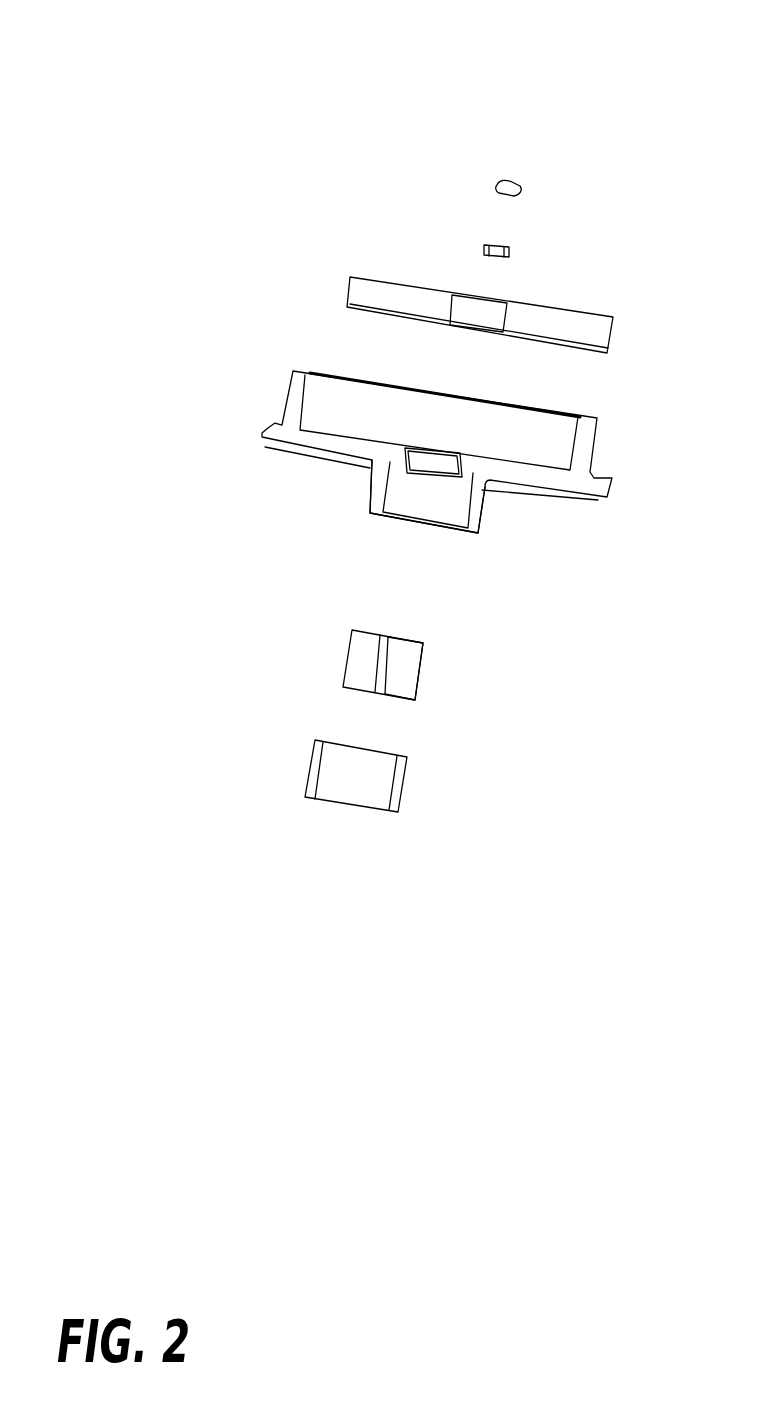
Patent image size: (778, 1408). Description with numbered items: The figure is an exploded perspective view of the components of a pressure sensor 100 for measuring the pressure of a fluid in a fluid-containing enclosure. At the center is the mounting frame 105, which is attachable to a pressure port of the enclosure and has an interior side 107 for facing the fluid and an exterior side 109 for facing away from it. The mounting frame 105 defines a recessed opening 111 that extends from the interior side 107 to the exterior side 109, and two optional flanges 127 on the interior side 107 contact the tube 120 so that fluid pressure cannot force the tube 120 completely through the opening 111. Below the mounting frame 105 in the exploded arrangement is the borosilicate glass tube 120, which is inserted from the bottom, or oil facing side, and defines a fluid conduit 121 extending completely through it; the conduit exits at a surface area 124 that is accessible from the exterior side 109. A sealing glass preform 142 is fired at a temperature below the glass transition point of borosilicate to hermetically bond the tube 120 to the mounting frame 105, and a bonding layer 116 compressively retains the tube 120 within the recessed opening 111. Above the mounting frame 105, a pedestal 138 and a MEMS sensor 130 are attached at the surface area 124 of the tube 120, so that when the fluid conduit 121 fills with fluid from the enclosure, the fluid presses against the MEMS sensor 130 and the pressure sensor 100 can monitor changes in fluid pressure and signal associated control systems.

The pressure sensor 100 is at (402, 66).
The mounting frame 105 is at (359, 529).
The interior side 107 is at (298, 495).
The exterior side 109 is at (287, 333).
The opening 111 is at (378, 567).
The bonding layer 116 is at (485, 733).
The tube 120 is at (447, 664).
The fluid conduit 121 is at (388, 699).
The surface area 124 is at (403, 638).
The flanges 127 is at (398, 467).
The MEMS sensor 130 is at (520, 190).
The pedestal 138 is at (512, 250).
The sealing glass preform 142 is at (337, 795).